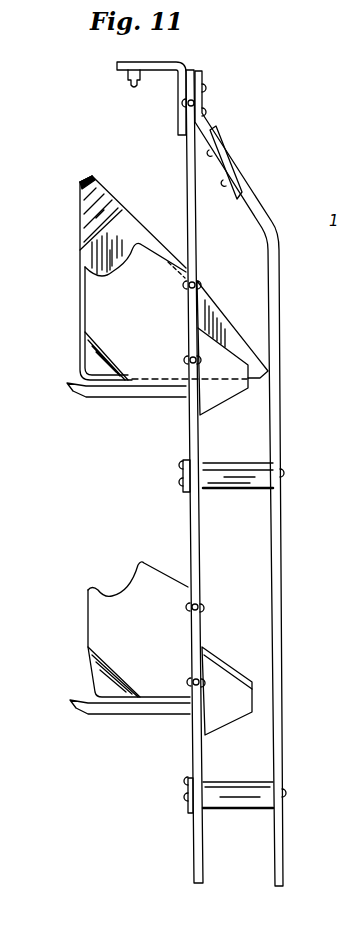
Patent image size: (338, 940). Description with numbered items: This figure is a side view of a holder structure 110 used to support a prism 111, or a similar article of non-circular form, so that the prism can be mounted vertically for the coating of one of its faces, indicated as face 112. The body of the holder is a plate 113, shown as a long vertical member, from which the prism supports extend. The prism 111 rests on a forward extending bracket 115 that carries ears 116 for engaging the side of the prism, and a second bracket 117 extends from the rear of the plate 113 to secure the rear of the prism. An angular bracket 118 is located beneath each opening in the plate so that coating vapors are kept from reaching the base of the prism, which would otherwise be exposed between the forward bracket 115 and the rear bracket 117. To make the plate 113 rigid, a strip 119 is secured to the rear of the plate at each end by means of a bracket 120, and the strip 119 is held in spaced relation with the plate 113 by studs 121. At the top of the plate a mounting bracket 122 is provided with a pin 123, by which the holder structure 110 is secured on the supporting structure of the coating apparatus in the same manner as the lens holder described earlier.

The structure 110 is at (247, 67).
The prism 111 is at (69, 178).
The face 112 is at (72, 228).
The plate 113 is at (186, 158).
The forward extending bracket 115 is at (100, 293).
The ears 116 is at (98, 359).
The second bracket 117 is at (226, 390).
The angular bracket 118 is at (152, 397).
The strip 119 is at (273, 323).
The bracket 120 is at (204, 122).
The studs 121 is at (253, 478).
The mounting bracket 122 is at (167, 63).
The pin 123 is at (127, 78).